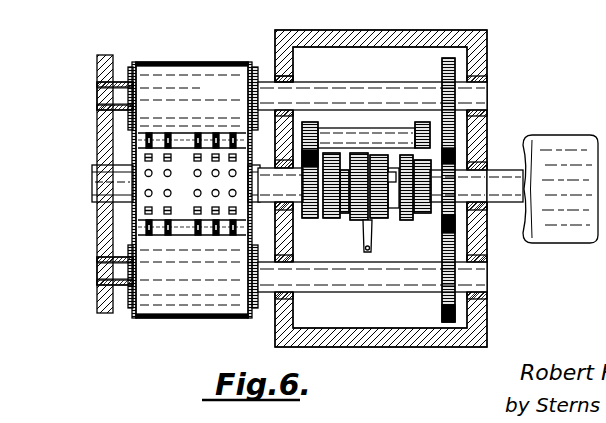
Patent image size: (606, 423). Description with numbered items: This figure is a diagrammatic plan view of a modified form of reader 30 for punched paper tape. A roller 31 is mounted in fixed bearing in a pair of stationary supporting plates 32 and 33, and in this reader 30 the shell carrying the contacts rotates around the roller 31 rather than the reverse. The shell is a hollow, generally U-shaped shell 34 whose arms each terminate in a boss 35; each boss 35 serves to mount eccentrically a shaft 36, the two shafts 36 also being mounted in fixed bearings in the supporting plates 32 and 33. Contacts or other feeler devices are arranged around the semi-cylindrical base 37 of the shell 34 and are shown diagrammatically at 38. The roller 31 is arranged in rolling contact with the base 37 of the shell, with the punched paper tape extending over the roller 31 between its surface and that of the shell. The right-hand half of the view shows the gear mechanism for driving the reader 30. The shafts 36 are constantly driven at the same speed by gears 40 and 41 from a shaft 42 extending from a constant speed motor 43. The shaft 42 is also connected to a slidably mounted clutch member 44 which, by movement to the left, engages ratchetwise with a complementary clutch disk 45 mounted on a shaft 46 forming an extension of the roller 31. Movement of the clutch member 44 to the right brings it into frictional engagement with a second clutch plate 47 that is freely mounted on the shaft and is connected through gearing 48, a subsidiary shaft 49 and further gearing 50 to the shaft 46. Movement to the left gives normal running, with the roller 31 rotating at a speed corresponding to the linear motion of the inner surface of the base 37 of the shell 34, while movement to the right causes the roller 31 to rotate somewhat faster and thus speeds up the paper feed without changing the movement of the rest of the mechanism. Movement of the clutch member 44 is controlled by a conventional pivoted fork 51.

The reader 30 is at (177, 32).
The roller 31 is at (92, 183).
The supporting plate 32 is at (97, 132).
The supporting plate 33 is at (277, 229).
The shell 34 is at (150, 312).
The boss 35 is at (128, 70).
The shaft 36 is at (100, 98).
The base 37 is at (135, 208).
The contacts 38 is at (198, 228).
The gear 40 is at (455, 73).
The gear 41 is at (455, 162).
The shaft 42 is at (500, 198).
The constant speed motor 43 is at (560, 140).
The clutch member 44 is at (387, 241).
The clutch disk 45 is at (330, 220).
The shaft 46 is at (283, 183).
The clutch plate 47 is at (407, 223).
The gearing 48 is at (430, 138).
The subsidiary shaft 49 is at (373, 137).
The gearing 50 is at (283, 150).
The fork 51 is at (372, 249).